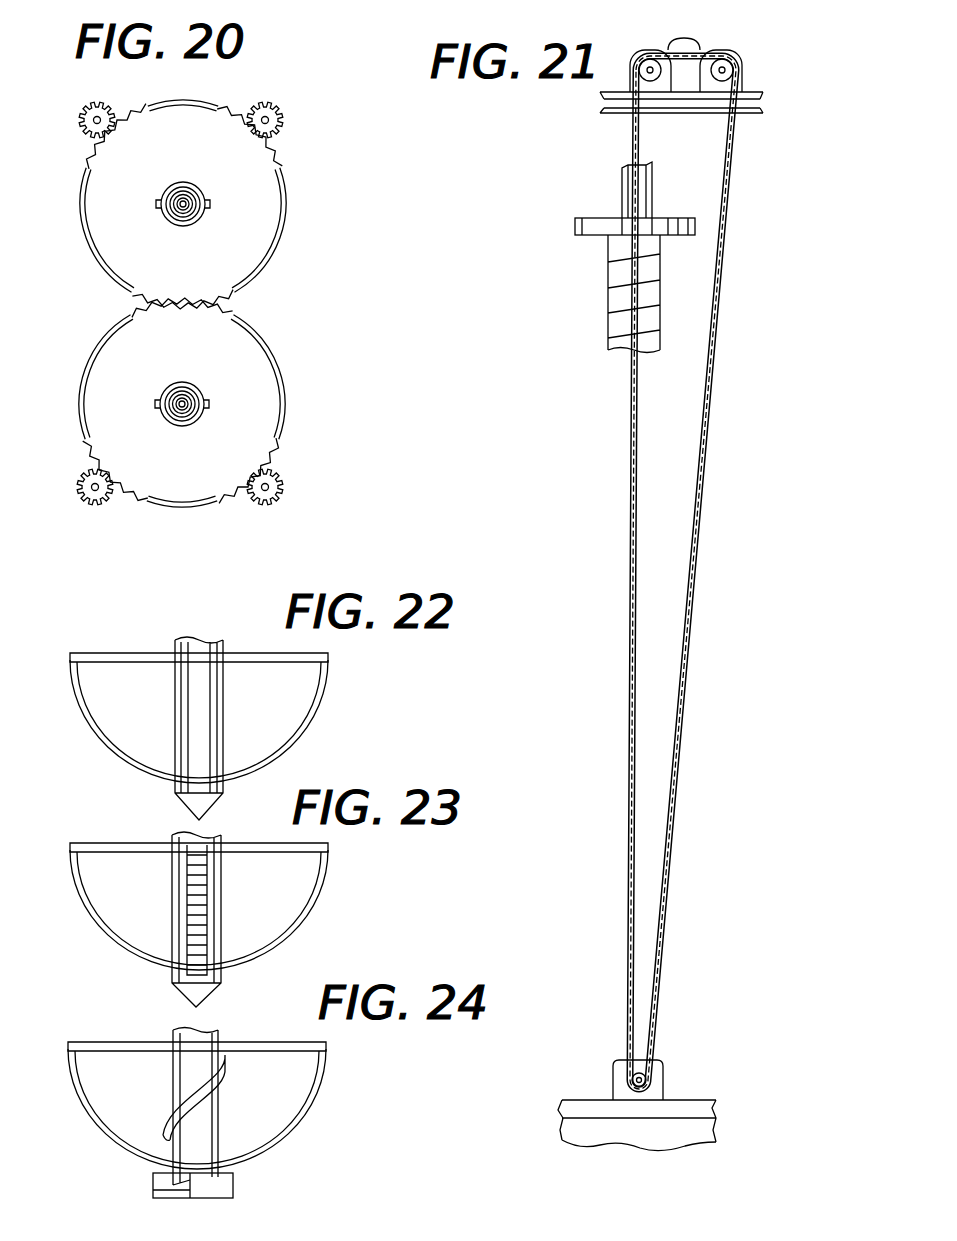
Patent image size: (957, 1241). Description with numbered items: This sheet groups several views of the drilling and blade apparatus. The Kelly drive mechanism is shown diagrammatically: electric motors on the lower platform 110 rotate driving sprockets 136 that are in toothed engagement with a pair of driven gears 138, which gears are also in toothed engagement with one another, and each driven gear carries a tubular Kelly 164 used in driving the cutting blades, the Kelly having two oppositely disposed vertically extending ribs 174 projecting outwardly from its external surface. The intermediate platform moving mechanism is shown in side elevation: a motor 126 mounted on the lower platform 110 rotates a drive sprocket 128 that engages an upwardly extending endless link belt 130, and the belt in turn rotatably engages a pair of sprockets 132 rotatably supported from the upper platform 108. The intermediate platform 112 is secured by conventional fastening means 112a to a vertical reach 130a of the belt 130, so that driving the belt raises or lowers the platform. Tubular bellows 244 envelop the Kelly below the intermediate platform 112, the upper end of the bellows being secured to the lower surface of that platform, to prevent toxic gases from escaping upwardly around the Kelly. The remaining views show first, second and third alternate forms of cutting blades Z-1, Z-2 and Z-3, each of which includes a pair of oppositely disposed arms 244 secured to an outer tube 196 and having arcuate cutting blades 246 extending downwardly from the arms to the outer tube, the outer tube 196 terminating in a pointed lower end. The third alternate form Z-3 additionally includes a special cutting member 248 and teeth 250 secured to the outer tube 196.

In FIG. 20, the driving sprockets 136 is at (283, 121).
In FIG. 20, the driven gears 138 is at (263, 230).
In FIG. 20, the tubular Kelly 164 is at (182, 226).
In FIG. 20, the vertically extending ribs 174 is at (156, 204).
In FIG. 21, the upper platform 108 is at (754, 112).
In FIG. 21, the lower platform 110 is at (584, 1108).
In FIG. 21, the intermediate platform 112 is at (582, 228).
In FIG. 21, the fastening means 112a is at (648, 210).
In FIG. 21, the motor 126 is at (655, 1060).
In FIG. 21, the drive sprocket 128 is at (650, 1078).
In FIG. 21, the endless link belt 130 is at (694, 585).
In FIG. 21, the vertical reach of belt 130a is at (631, 418).
In FIG. 21, the sprockets 132 is at (683, 38).
In FIG. 21, the tubular bellows / arms 244 is at (606, 298).
In FIG. 22, the tubular bellows / arms 244 is at (224, 655).
In FIG. 23, the tubular bellows / arms 244 is at (222, 843).
In FIG. 24, the tubular bellows / arms 244 is at (220, 1040).
In FIG. 22, the bowl 246 is at (312, 733).
In FIG. 23, the bowl 246 is at (305, 920).
In FIG. 24, the bowl 246 is at (293, 1128).
In FIG. 24, the special cutting member 248 is at (226, 1062).
In FIG. 24, the teeth 250 is at (234, 1187).
In FIG. 22, the outer tube 196 is at (210, 708).
In FIG. 23, the outer tube 196 is at (214, 870).
In FIG. 24, the outer tube 196 is at (212, 1115).
In FIG. 22, the first alternate form of blade Z-1 is at (326, 675).
In FIG. 23, the second alternate form of blade Z-2 is at (326, 870).
In FIG. 24, the third alternate form of blade Z-3 is at (324, 1078).